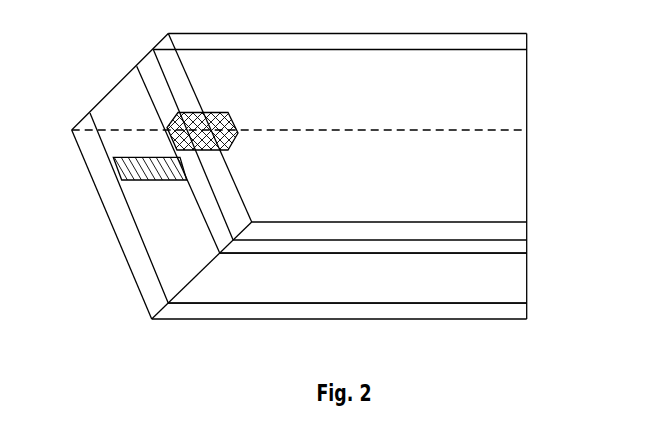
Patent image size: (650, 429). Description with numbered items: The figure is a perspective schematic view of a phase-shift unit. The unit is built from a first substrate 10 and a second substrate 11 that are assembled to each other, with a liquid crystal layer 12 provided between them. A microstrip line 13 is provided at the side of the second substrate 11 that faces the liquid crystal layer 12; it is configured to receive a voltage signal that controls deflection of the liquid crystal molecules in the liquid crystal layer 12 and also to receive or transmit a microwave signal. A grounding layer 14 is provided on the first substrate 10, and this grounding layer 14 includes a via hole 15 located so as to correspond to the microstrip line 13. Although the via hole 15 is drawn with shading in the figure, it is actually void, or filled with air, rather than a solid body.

The first substrate 10 is at (513, 43).
The second substrate 11 is at (507, 312).
The liquid crystal layer 12 is at (507, 286).
The microstrip line 13 is at (117, 167).
The grounding layer 14 is at (507, 249).
The via hole 15 is at (237, 138).